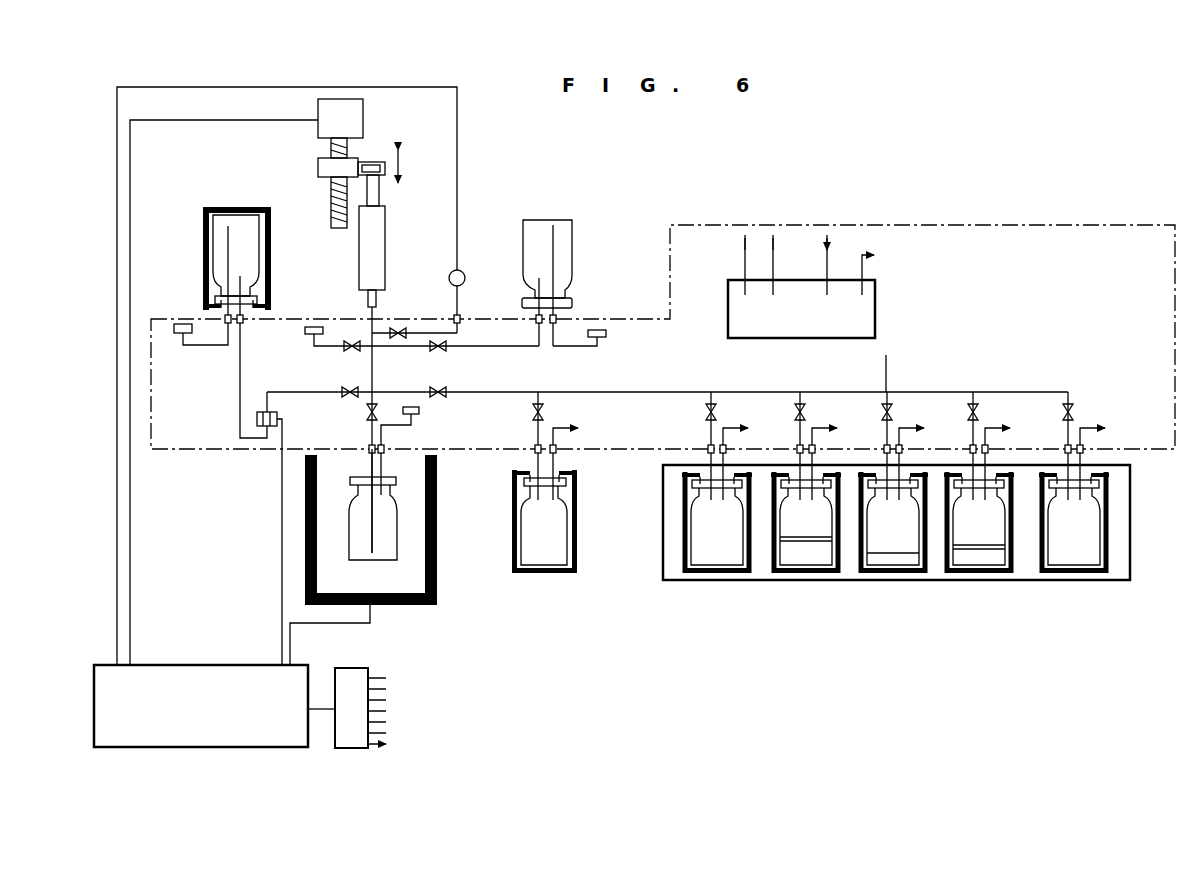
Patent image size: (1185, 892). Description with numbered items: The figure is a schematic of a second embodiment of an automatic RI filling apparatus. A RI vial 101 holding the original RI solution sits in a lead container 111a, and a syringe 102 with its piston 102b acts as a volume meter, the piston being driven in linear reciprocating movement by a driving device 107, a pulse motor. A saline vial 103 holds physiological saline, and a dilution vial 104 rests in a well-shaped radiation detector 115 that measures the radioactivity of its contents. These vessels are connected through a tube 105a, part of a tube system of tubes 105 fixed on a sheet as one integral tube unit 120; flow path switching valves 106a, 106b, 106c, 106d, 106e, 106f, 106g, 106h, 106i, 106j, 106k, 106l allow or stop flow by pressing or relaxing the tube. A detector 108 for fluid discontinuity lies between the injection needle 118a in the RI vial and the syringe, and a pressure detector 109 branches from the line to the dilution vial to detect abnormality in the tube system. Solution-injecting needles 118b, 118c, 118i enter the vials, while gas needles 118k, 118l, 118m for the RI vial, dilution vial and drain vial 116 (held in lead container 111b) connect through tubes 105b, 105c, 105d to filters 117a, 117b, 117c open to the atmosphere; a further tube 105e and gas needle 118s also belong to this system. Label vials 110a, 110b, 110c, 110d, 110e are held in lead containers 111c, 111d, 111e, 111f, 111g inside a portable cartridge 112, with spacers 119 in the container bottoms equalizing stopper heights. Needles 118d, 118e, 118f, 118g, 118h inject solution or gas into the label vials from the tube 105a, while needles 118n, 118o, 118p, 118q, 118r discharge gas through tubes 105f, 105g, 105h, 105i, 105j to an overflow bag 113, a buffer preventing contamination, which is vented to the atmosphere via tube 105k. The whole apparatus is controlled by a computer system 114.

The RI vial 101 is at (208, 214).
The syringe 102 is at (357, 255).
The piston 102b is at (383, 197).
The saline vial 103 is at (522, 233).
The dilution vial 104 is at (397, 548).
The tube 105 is at (273, 365).
The tube 105a is at (577, 381).
The tube 105b is at (204, 365).
The tube 105c is at (592, 357).
The tube 105d is at (412, 460).
The tube 105e is at (583, 437).
The tube 105f is at (748, 437).
The tube 105g is at (840, 437).
The tube 105h is at (927, 437).
The tube 105i is at (1011, 437).
The tube 105j is at (1106, 437).
The tube 105k is at (892, 269).
The switching valve 106a is at (339, 336).
The switching valve 106b is at (342, 380).
The switching valve 106c is at (350, 412).
The switching valve 106d is at (437, 380).
The switching valve 106e is at (455, 337).
The switching valve 106f is at (565, 420).
The switching valve 106g is at (738, 420).
The switching valve 106h is at (826, 420).
The switching valve 106i is at (910, 420).
The switching valve 106j is at (996, 420).
The switching valve 106k is at (1094, 420).
The switching valve 106l is at (414, 323).
The driving device 107 is at (360, 118).
The detector for fluid discontinuity 108 is at (270, 428).
The pressure detector 109 is at (476, 267).
The label vial 110a is at (717, 522).
The label vial 110b is at (806, 522).
The label vial 110c is at (893, 522).
The label vial 110d is at (979, 522).
The label vial 110e is at (1074, 522).
The lead container 111a is at (213, 250).
The lead container 111b is at (514, 529).
The lead container 111c is at (716, 573).
The lead container 111d is at (805, 573).
The lead container 111e is at (890, 573).
The lead container 111f is at (975, 573).
The lead container 111g is at (1073, 573).
The portable cartridge 112 is at (675, 582).
The overflow bag 113 is at (801, 286).
The computer system 114 is at (240, 706).
The radiation detector 115 is at (378, 606).
The drain vial 116 is at (555, 560).
The filter 117a is at (192, 325).
The filter 117b is at (608, 321).
The filter 117c is at (427, 426).
The injection needle 118a is at (240, 287).
The injection needle 118b is at (370, 522).
The injection needle 118c is at (528, 497).
The injection needle 118d is at (709, 498).
The injection needle 118e is at (798, 498).
The injection needle 118f is at (885, 498).
The injection needle 118g is at (971, 498).
The injection needle 118h is at (1066, 498).
The injection needle 118i is at (539, 300).
The injection needle 118k is at (226, 233).
The injection needle 118l is at (389, 491).
The injection needle 118m is at (556, 497).
The injection needle 118n is at (725, 498).
The injection needle 118o is at (814, 498).
The injection needle 118p is at (901, 498).
The injection needle 118q is at (987, 498).
The injection needle 118r is at (1082, 498).
The injection needle 118s is at (553, 262).
The spacer 119 is at (962, 556).
The tube unit 120 is at (1008, 224).